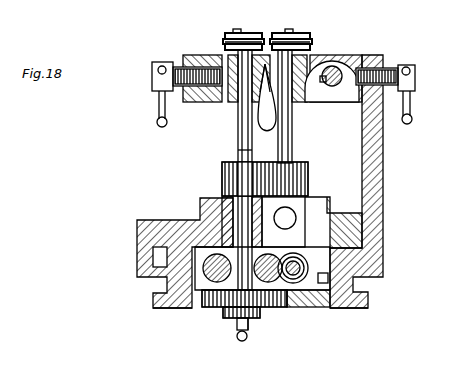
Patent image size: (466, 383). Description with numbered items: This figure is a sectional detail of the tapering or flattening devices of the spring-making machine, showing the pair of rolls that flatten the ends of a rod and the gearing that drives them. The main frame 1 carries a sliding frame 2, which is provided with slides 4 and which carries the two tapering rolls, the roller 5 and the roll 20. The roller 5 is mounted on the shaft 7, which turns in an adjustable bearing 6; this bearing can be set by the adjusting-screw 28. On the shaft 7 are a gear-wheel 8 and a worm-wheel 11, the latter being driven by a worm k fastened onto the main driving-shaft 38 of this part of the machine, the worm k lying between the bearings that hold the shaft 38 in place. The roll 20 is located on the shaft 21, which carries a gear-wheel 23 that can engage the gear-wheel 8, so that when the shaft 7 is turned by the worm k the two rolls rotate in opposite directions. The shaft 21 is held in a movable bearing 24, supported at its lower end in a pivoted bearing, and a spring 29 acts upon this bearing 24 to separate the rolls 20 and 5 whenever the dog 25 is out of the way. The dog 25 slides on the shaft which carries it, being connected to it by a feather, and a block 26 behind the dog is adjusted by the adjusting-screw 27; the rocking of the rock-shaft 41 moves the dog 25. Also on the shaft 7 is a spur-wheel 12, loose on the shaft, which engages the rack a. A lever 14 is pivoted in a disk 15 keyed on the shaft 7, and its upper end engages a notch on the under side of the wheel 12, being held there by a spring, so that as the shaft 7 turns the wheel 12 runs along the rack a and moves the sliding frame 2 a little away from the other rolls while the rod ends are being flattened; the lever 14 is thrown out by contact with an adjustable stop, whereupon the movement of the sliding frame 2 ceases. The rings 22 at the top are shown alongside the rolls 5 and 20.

The main frame 1 is at (162, 306).
The sliding frame 2 is at (356, 181).
The slides 4 is at (160, 228).
The roller 5 is at (241, 34).
The adjustable bearing 6 is at (224, 100).
The shaft 7 is at (244, 124).
The gear-wheel 8 is at (238, 178).
The worm-wheel 11 is at (218, 270).
The spur-wheel 12 is at (208, 304).
The lever 14 is at (243, 342).
The disk 15 is at (232, 318).
The roll for tapering 20 is at (294, 33).
The shaft 21 is at (292, 118).
The rings 22 is at (226, 44).
The gear-wheel 23 is at (300, 170).
The movable bearing 24 is at (322, 60).
The dog 25 is at (352, 62).
The block 26 is at (414, 59).
The adjusting-screw 27 is at (415, 72).
The adjusting-screw 28 is at (184, 66).
The spring 29 is at (264, 94).
The main driving-shaft 38 is at (292, 290).
The rock-shaft 41 is at (332, 88).
The rack a is at (312, 306).
The worm k is at (268, 320).